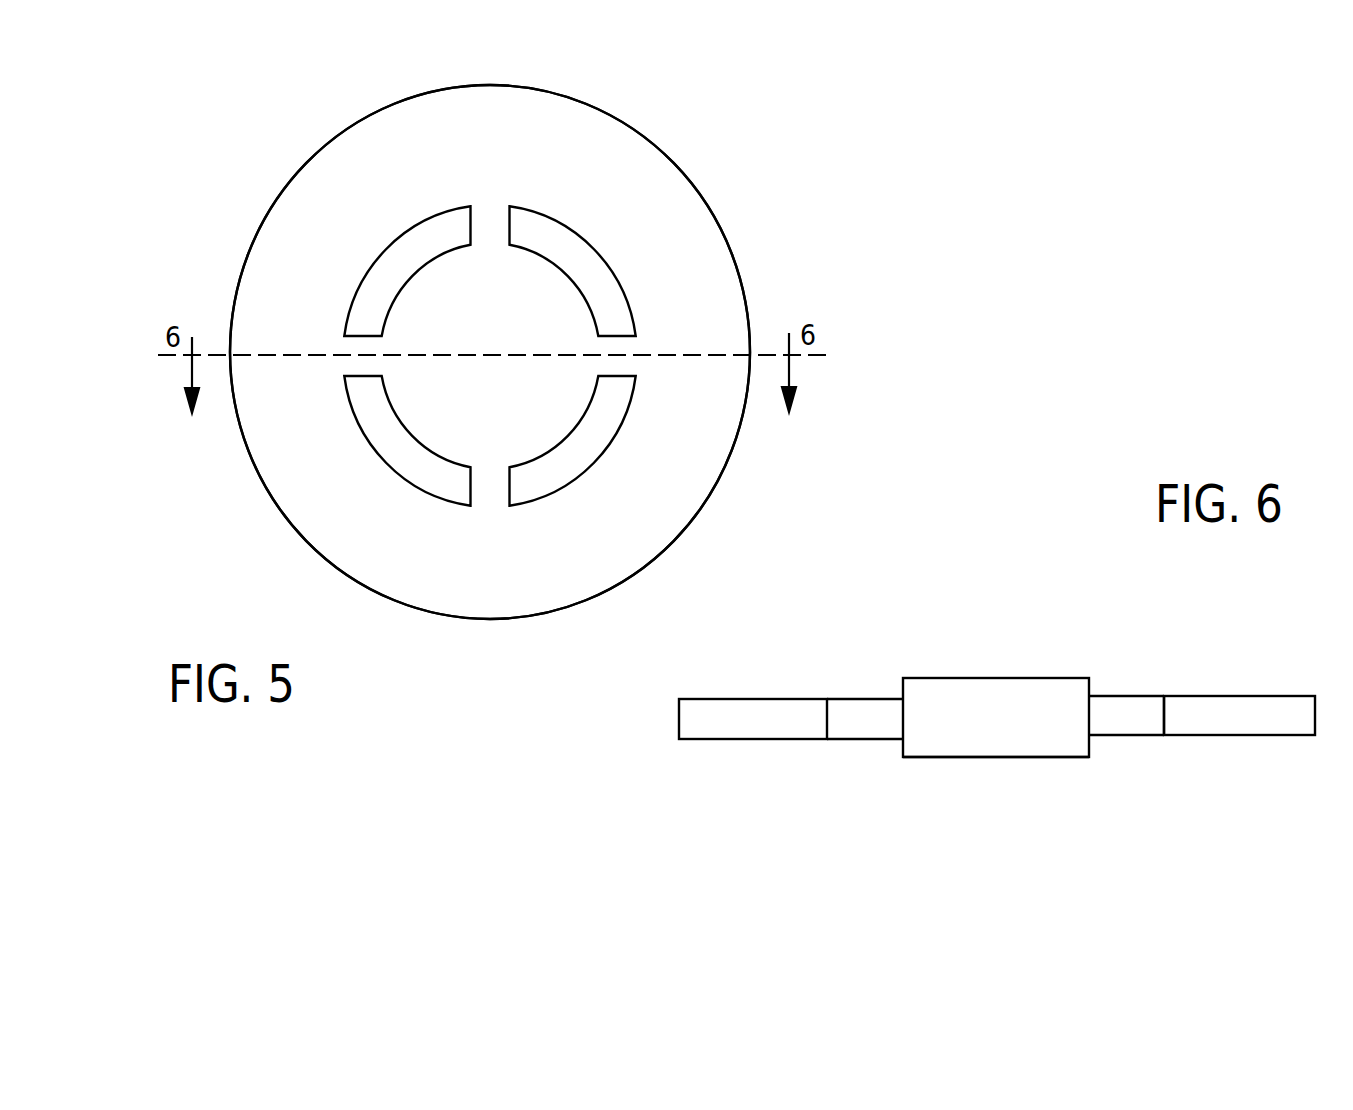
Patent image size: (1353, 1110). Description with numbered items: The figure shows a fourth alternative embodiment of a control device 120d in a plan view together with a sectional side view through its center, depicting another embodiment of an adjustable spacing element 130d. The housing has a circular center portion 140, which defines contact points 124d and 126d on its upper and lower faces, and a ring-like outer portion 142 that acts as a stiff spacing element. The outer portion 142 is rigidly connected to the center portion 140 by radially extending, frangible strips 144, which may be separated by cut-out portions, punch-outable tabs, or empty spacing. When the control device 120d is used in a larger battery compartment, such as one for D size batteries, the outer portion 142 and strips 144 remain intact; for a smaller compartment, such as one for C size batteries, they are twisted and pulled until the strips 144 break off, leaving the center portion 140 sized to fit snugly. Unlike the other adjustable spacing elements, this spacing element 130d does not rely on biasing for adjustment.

In FIG. 5, the control device 120d is at (770, 178).
In FIG. 6, the control device 120d is at (1072, 523).
In FIG. 5, the spacing element 130d is at (340, 163).
In FIG. 6, the spacing element 130d is at (697, 740).
In FIG. 5, the ring-like outer portion 142 is at (266, 218).
In FIG. 6, the ring-like outer portion 142 is at (1258, 695).
In FIG. 5, the frangible strips 144 is at (490, 240).
In FIG. 6, the frangible strips 144 is at (866, 698).
In FIG. 5, the circular center portion 140 is at (517, 335).
In FIG. 6, the circular center portion 140 is at (1025, 732).
In FIG. 6, the contact point 124d is at (997, 678).
In FIG. 6, the contact point 126d is at (995, 757).